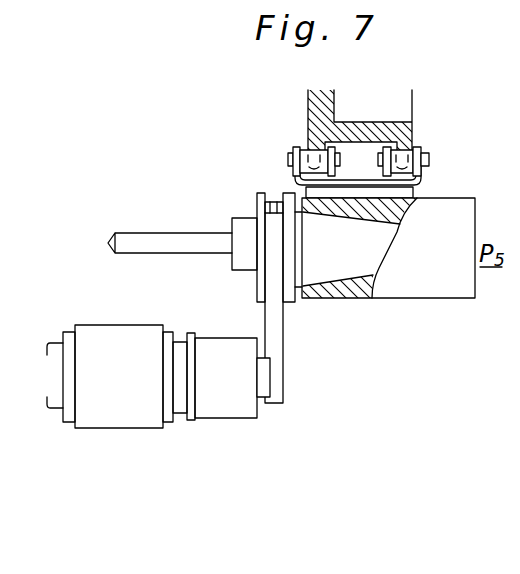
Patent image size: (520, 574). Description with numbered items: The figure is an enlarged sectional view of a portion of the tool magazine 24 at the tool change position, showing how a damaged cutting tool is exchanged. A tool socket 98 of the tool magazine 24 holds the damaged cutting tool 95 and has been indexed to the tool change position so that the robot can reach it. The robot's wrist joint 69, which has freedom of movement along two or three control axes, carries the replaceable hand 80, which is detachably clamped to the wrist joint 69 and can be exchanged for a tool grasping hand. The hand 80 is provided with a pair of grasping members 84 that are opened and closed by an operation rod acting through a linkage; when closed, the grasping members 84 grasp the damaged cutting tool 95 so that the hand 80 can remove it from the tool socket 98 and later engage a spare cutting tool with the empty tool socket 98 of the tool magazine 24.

The tool magazine 24 is at (420, 135).
The tool socket 98 is at (424, 288).
The damaged cutting tool 95 is at (256, 196).
The grasping members 84 is at (284, 320).
The wrist joint 69 is at (58, 418).
The replaceable hand 80 is at (212, 418).